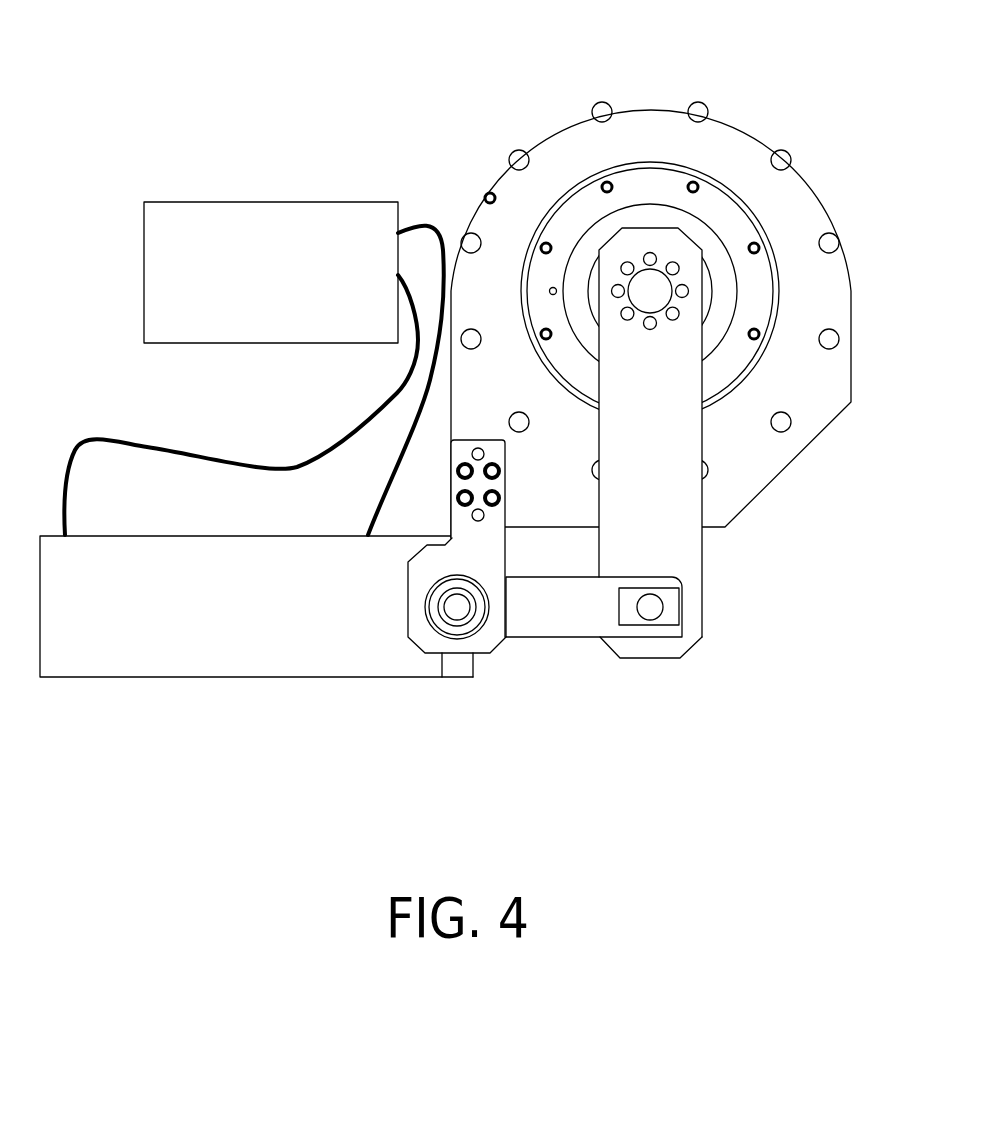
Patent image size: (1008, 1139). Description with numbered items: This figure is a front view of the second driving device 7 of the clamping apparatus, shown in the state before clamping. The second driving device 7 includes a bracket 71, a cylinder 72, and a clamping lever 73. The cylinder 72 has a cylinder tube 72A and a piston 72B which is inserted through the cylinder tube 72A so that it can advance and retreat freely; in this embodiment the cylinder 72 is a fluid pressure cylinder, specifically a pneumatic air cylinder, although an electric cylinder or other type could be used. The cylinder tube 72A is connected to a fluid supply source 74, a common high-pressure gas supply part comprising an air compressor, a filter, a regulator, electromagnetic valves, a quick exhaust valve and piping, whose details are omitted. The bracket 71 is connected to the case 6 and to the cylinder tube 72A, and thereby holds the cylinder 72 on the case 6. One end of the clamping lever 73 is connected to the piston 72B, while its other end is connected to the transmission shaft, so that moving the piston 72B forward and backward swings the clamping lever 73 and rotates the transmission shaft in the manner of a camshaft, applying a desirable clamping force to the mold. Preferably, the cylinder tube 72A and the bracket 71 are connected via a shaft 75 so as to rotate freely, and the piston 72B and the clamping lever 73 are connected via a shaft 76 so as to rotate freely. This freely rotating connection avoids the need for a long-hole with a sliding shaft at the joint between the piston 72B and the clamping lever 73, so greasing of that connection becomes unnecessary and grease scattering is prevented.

The case 6 is at (813, 185).
The second driving device 7 is at (461, 411).
The bracket 71 is at (468, 643).
The cylinder 72 is at (398, 616).
The cylinder tube 72A is at (222, 655).
The piston 72B is at (631, 623).
The clamping lever 73 is at (683, 423).
The fluid supply source 74 is at (297, 210).
The shaft 75 is at (430, 617).
The shaft 76 is at (657, 608).